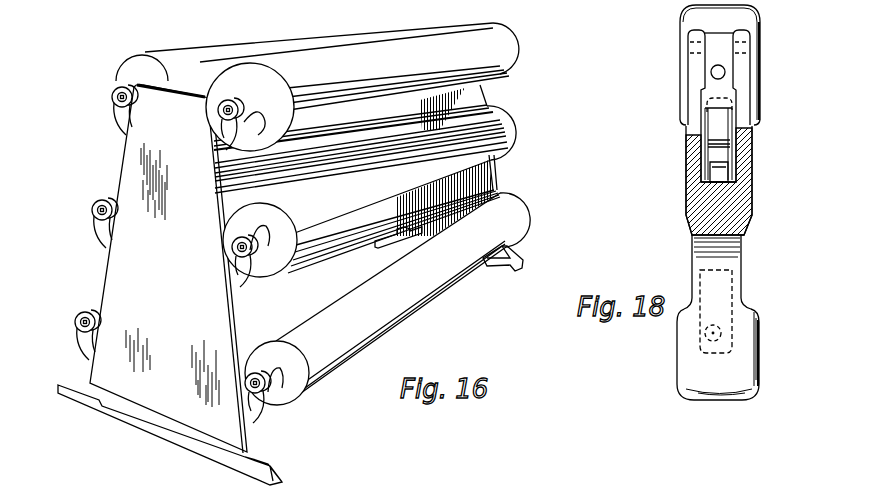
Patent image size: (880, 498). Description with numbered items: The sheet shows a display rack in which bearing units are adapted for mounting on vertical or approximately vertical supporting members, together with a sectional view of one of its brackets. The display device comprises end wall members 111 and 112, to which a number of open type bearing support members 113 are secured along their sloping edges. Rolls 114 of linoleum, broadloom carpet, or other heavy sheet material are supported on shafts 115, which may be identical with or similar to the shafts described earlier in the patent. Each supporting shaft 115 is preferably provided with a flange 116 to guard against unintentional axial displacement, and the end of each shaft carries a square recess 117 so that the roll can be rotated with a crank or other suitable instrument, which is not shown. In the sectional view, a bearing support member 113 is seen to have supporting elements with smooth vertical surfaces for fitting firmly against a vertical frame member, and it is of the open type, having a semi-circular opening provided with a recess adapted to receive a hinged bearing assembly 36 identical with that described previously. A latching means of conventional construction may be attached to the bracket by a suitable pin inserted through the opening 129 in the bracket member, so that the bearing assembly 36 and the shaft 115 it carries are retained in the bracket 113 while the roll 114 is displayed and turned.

In FIG. 16, the end wall member 111 is at (243, 442).
In FIG. 16, the end wall member 112 is at (495, 169).
In FIG. 16, the bearing support member 113 is at (120, 113).
In FIG. 18, the bearing support member 113 is at (758, 355).
In FIG. 16, the roll 114 is at (223, 48).
In FIG. 16, the shaft 115 is at (140, 83).
In FIG. 16, the flange 116 is at (223, 108).
In FIG. 16, the square recess 117 is at (111, 98).
In FIG. 18, the opening 129 is at (690, 58).
In FIG. 18, the hinged bearing assembly 36 is at (686, 132).